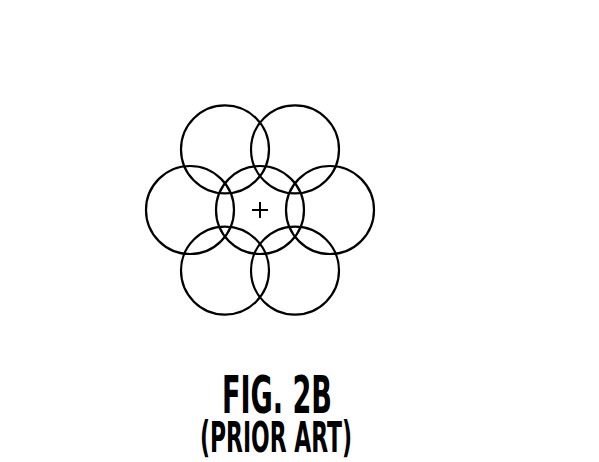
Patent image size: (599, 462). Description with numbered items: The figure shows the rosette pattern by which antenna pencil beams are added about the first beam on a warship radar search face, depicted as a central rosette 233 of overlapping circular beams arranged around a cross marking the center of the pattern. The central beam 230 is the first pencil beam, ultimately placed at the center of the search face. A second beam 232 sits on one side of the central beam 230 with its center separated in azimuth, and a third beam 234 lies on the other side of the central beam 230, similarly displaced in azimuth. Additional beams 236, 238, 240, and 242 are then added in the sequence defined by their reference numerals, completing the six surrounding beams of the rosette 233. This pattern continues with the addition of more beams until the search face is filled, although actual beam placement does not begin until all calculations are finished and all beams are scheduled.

The central beam 230 is at (280, 250).
The second beam 232 is at (375, 202).
The central rosette 233 is at (427, 324).
The third beam 234 is at (148, 207).
The additional beam 236 is at (337, 132).
The additional beam 238 is at (186, 290).
The additional beam 240 is at (322, 305).
The additional beam 242 is at (228, 108).